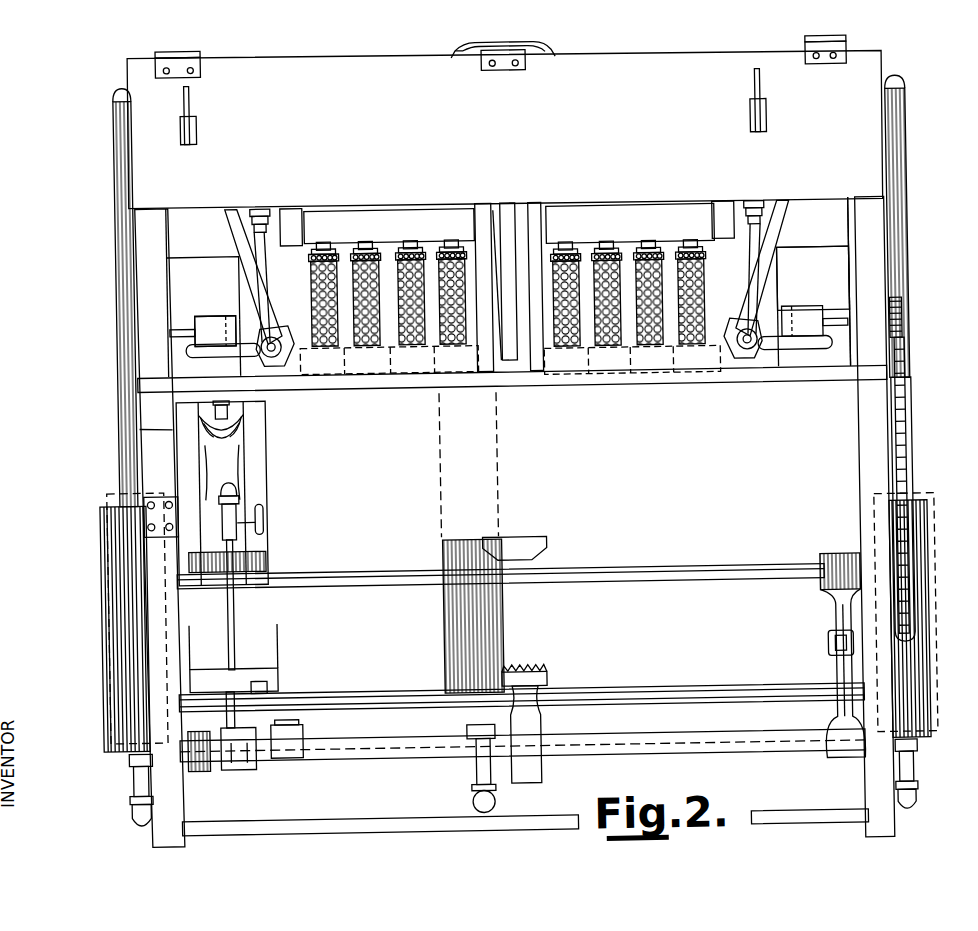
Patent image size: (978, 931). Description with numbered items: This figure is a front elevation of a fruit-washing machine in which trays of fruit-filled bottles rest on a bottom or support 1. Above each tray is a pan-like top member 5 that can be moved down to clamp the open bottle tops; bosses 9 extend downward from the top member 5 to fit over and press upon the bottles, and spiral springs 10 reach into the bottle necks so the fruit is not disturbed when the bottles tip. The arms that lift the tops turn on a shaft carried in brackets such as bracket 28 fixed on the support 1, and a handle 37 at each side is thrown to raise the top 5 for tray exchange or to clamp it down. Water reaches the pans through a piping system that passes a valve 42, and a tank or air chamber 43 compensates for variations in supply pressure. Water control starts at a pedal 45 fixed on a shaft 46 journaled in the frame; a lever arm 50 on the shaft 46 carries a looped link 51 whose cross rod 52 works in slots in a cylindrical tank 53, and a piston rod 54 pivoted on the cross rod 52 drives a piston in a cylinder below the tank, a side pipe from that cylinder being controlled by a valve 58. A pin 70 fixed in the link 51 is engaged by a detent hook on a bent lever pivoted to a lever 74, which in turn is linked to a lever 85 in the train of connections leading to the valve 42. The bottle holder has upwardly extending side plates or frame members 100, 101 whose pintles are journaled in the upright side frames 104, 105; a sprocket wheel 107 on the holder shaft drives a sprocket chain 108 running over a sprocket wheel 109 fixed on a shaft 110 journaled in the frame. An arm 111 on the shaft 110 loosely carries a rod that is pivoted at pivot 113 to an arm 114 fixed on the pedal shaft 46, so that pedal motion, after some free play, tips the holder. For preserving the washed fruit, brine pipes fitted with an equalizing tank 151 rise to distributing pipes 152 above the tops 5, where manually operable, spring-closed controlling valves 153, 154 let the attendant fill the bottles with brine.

The bottom or support 1 is at (590, 390).
The top member 5 is at (509, 225).
The bosses 9 is at (325, 248).
The spiral springs 10 is at (446, 248).
The bracket 28 is at (512, 370).
The handle 37 is at (512, 357).
The valve 42 is at (298, 724).
The tank or air chamber 43 is at (500, 613).
The pedal 45 is at (527, 666).
The shaft 46 is at (679, 759).
The lever arm 50 is at (240, 768).
The looped link 51 is at (268, 479).
The cross rod 52 is at (262, 432).
The cylindrical tank 53 is at (247, 445).
The piston rod 54 is at (229, 397).
The valve 58 is at (265, 508).
The pin 70 is at (253, 662).
The lever 74 is at (232, 639).
The lever 85 is at (263, 680).
The side plate or frame member 100 is at (232, 233).
The side plate or frame member 101 is at (794, 230).
The upright side frame 104 is at (157, 336).
The upright side frame 105 is at (876, 291).
The sprocket wheel 107 is at (905, 337).
The sprocket chain 108 is at (907, 367).
The sprocket wheel 109 is at (900, 595).
The shaft 110 is at (697, 594).
The arm 111 is at (822, 590).
The pivot 113 is at (826, 650).
The arm 114 is at (832, 677).
The equalizing tank 151 is at (103, 598).
The distributing pipes 152 is at (927, 615).
The controlling valve 153 is at (196, 92).
The controlling valve 154 is at (767, 94).